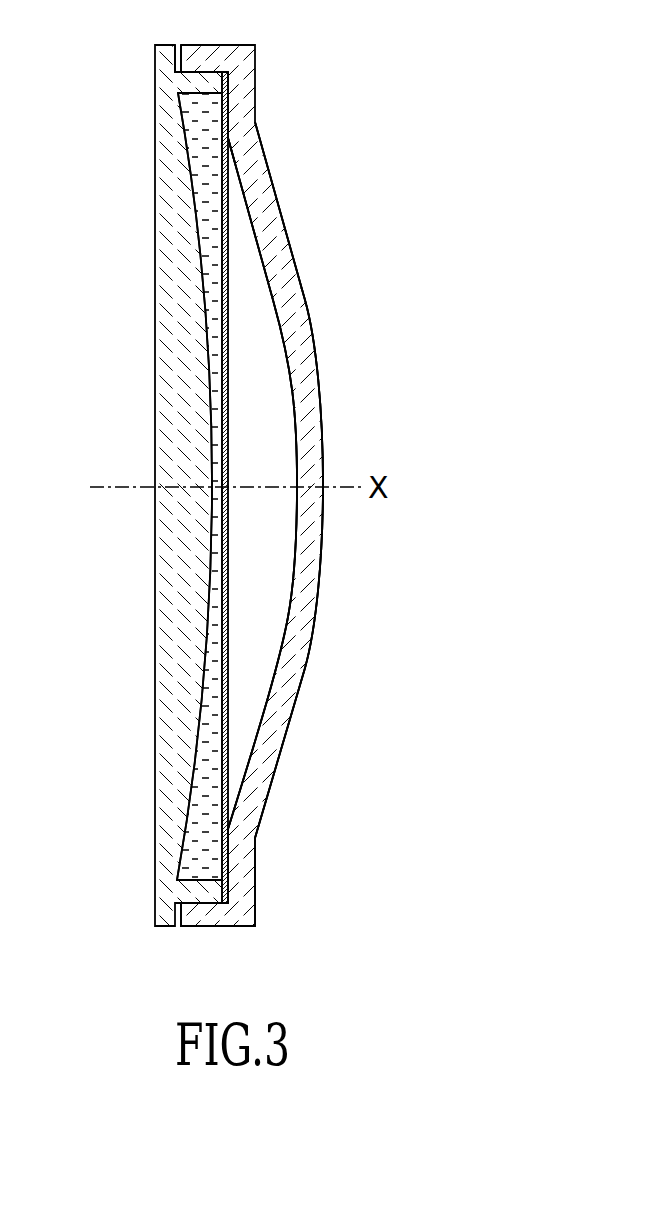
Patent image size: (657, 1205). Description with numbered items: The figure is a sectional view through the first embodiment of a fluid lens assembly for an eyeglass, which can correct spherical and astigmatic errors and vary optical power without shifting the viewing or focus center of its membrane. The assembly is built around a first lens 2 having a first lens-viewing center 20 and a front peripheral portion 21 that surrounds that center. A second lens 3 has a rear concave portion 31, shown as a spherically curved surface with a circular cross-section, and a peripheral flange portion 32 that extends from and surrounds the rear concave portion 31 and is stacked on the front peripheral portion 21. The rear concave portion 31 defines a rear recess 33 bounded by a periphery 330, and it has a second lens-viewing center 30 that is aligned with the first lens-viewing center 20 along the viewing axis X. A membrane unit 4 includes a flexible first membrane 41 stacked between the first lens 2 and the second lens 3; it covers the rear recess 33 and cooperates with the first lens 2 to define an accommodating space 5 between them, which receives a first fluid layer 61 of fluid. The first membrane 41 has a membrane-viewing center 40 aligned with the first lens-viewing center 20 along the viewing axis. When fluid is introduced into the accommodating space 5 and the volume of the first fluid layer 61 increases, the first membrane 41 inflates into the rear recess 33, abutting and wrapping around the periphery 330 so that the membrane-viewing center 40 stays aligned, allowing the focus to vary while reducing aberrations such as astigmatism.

The first lens 2 is at (142, 257).
The first lens-viewing center 20 is at (153, 486).
The front peripheral portion 21 is at (168, 72).
The second lens 3 is at (388, 775).
The second lens-viewing center 30 is at (324, 493).
The rear concave portion 31 is at (283, 757).
The peripheral flange portion 32 is at (256, 883).
The rear recess 33 is at (260, 653).
The periphery of the rear recess 330 is at (236, 136).
The membrane unit 4 is at (240, 226).
The membrane-viewing center 40 is at (227, 487).
The first membrane 41 is at (229, 270).
The accommodating space 5 is at (215, 167).
The first fluid layer 61 is at (196, 863).